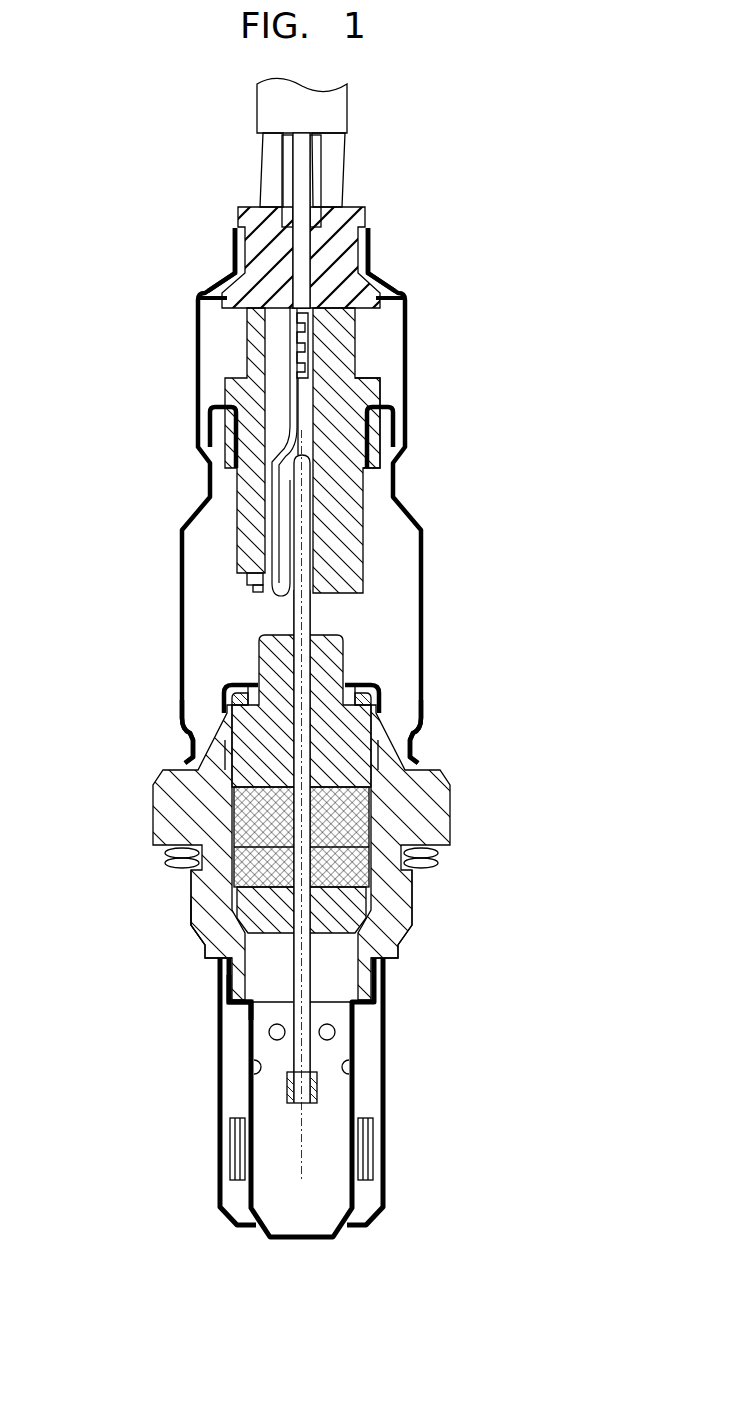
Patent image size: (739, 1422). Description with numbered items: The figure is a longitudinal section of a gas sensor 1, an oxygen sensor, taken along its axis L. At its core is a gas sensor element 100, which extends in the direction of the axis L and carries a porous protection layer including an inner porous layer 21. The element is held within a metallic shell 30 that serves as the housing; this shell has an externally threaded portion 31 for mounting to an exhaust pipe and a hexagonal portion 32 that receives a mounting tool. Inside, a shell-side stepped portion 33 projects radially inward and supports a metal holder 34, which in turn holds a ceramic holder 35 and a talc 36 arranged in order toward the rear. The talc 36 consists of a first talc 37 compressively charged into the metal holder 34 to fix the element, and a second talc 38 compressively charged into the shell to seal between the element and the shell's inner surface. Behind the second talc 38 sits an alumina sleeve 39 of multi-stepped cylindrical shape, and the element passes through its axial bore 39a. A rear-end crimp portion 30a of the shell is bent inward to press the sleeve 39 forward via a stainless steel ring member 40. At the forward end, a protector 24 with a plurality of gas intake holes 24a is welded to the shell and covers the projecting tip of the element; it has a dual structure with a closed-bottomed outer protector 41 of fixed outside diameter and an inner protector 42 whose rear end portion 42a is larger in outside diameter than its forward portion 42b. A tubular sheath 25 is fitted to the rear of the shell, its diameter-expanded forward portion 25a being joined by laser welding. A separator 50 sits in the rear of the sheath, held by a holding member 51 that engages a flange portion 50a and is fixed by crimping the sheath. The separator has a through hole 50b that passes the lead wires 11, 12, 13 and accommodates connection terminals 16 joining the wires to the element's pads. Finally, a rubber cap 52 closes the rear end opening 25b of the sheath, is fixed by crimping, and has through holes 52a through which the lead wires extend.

The gas sensor 1 is at (561, 252).
The lead wire 11 is at (300, 187).
The lead wire 12 is at (268, 148).
The lead wire 13 is at (333, 176).
The connection terminals 16 is at (291, 433).
The inner porous layer 21 is at (307, 1087).
The protector 24 is at (290, 1118).
The gas intake holes 24a is at (336, 1030).
The tubular sheath 25 is at (197, 350).
The diameter-expanded forward portion 25a is at (424, 748).
The rear end opening 25b is at (369, 250).
The metallic shell 30 is at (318, 853).
The rear-end crimp portion 30a is at (378, 690).
The externally threaded portion 31 is at (408, 922).
The hexagonal portion 32 is at (452, 792).
The shell-side stepped portion 33 is at (362, 904).
The metal holder 34 is at (215, 960).
The ceramic holder 35 is at (200, 924).
The talc 36 is at (238, 844).
The first talc 37 is at (240, 871).
The second talc 38 is at (238, 828).
The sleeve 39 is at (190, 737).
The axial bore 39a is at (300, 657).
The ring member 40 is at (382, 698).
The outer protector 41 is at (388, 1160).
The inner protector 42 is at (247, 1060).
The rear end portion 42a is at (232, 1006).
The forward portion 42b is at (232, 1120).
The separator 50 is at (255, 334).
The flange portion 50a is at (372, 402).
The through hole 50b is at (310, 385).
The holding member 51 is at (222, 412).
The rubber cap 52 is at (270, 262).
The through holes 52a is at (305, 274).
The gas sensor element 100 is at (307, 1088).
The axis L is at (302, 1170).